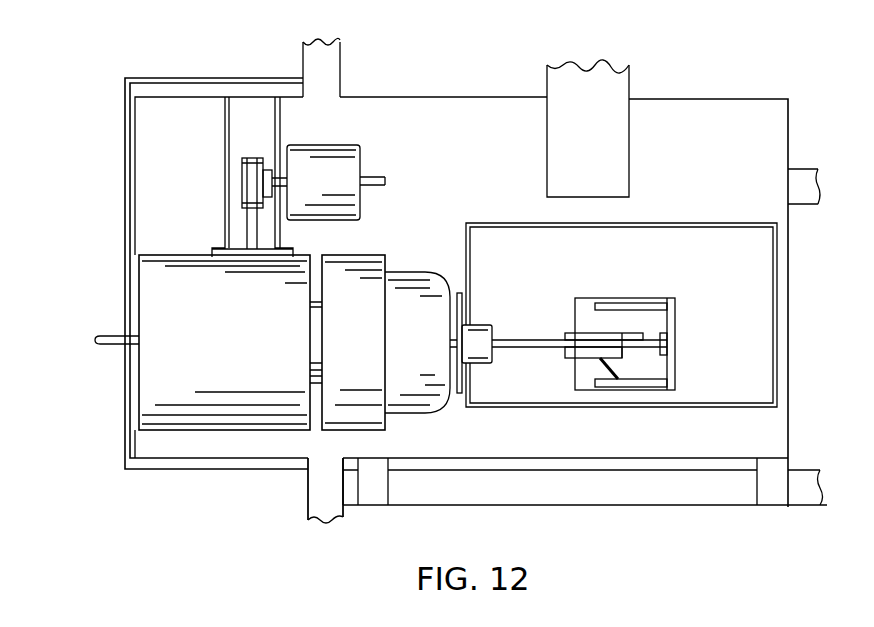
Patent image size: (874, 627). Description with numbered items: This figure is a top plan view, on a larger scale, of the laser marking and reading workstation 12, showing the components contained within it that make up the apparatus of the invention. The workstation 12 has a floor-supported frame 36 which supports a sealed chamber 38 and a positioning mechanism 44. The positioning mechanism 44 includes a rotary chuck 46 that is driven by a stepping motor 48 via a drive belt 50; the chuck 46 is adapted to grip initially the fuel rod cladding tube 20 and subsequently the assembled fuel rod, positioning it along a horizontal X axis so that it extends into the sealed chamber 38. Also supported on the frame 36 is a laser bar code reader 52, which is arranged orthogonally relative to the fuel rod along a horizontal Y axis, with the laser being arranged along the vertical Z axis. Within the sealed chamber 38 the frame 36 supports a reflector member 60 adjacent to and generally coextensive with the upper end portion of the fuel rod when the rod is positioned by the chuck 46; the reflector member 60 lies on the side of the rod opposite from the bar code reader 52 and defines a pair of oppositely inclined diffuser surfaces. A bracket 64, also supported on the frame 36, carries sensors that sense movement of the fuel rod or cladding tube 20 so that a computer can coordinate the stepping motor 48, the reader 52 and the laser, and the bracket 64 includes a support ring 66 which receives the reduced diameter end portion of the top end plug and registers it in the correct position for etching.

The laser marking and reading workstation 12 is at (714, 76).
The fuel rod cladding tube 20 is at (107, 334).
The floor-supported frame 36 is at (305, 505).
The sealed chamber 38 is at (768, 298).
The positioning mechanism 44 is at (173, 437).
The rotary chuck 46 is at (428, 355).
The stepping motor 48 is at (340, 158).
The drive belt 50 is at (253, 230).
The laser bar code reader 52 is at (599, 172).
The reflector member 60 is at (567, 358).
The bracket 64 is at (603, 384).
The support ring 66 is at (663, 356).